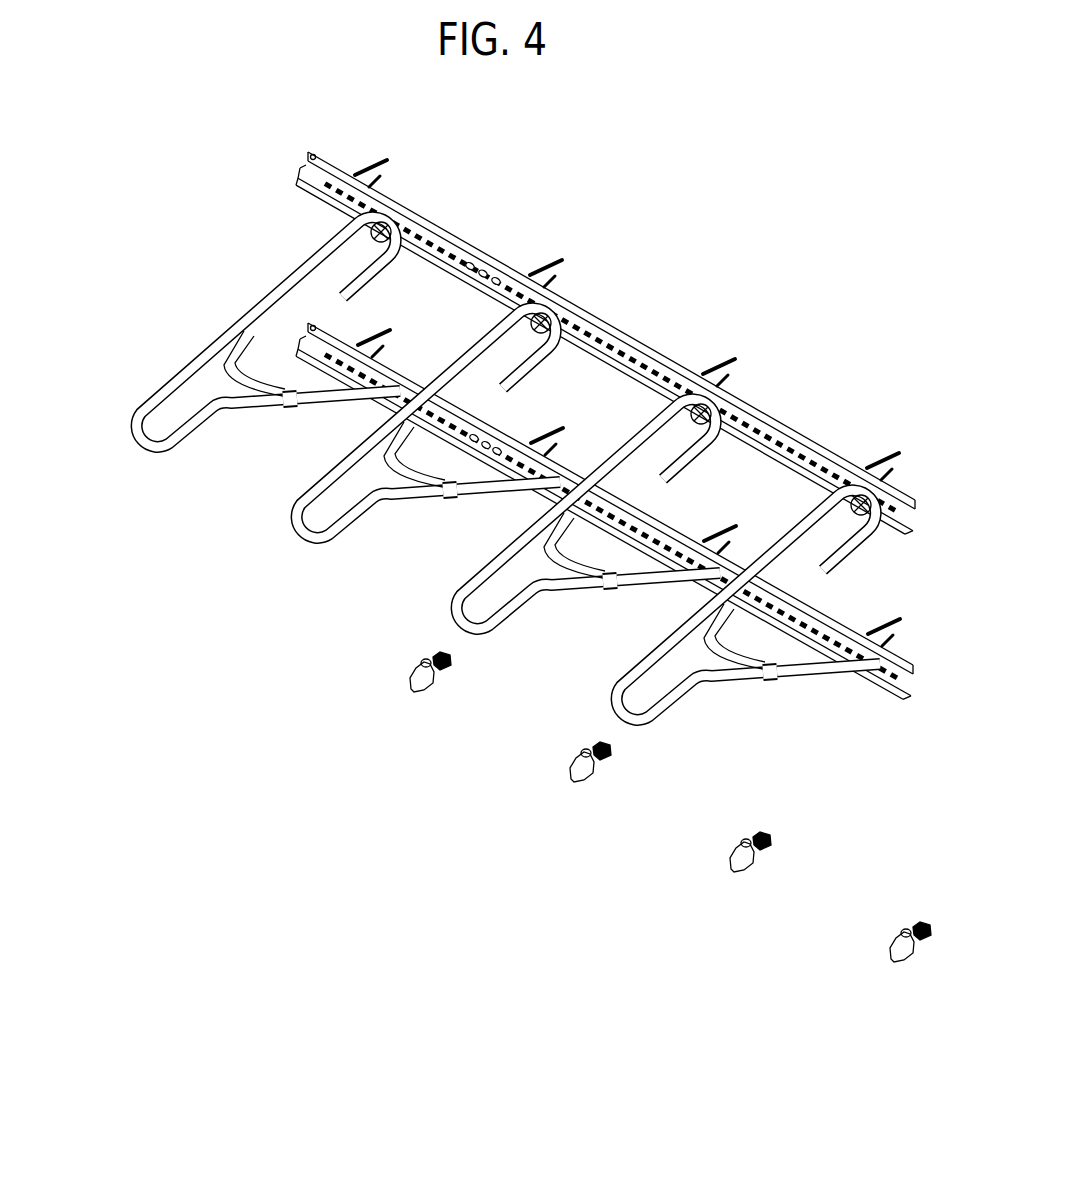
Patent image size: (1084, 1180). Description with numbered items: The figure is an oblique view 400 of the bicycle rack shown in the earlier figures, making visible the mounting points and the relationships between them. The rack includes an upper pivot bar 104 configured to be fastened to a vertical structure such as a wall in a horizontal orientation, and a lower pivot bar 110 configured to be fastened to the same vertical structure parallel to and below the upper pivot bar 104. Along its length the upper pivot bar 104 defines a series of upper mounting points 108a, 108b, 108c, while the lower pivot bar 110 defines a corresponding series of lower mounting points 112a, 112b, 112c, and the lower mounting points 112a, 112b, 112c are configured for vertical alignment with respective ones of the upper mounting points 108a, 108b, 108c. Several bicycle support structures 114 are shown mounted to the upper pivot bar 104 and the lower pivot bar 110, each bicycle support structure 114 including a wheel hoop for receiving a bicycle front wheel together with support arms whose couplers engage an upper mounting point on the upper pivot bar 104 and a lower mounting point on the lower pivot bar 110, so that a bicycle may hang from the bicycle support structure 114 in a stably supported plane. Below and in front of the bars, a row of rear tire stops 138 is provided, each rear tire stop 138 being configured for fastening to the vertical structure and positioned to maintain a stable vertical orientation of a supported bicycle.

The oblique view 400 is at (502, 587).
The upper pivot bar 104 is at (813, 432).
The lower pivot bar 110 is at (876, 610).
The upper mounting point 108a is at (469, 263).
The upper mounting point 108b is at (485, 270).
The upper mounting point 108c is at (499, 278).
The lower mounting point 112a is at (477, 435).
The lower mounting point 112b is at (489, 443).
The lower mounting point 112c is at (493, 452).
The bicycle support structure 114 is at (127, 437).
The rear tire stop 138 is at (412, 690).